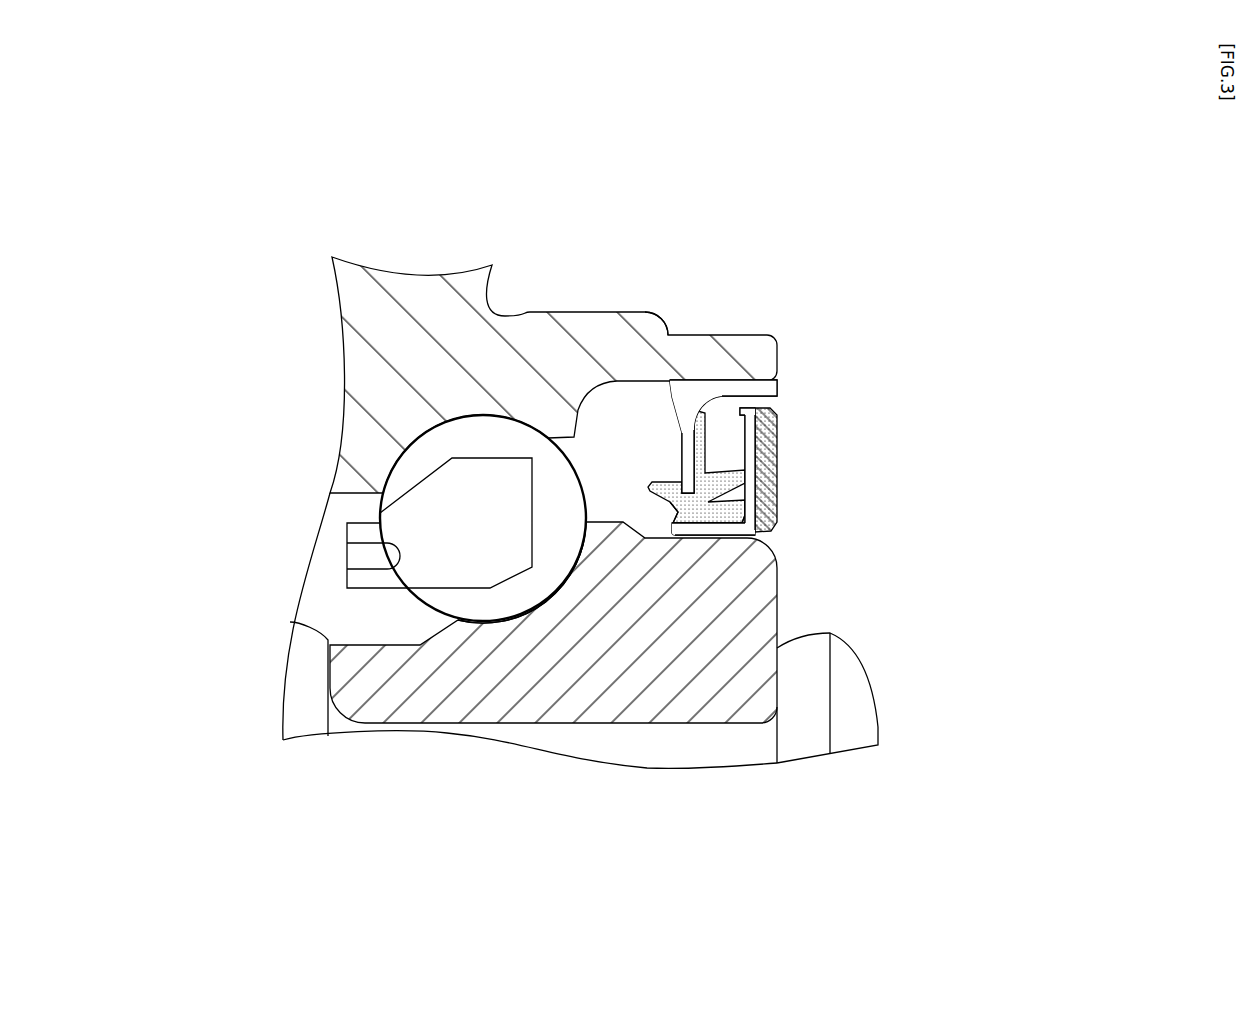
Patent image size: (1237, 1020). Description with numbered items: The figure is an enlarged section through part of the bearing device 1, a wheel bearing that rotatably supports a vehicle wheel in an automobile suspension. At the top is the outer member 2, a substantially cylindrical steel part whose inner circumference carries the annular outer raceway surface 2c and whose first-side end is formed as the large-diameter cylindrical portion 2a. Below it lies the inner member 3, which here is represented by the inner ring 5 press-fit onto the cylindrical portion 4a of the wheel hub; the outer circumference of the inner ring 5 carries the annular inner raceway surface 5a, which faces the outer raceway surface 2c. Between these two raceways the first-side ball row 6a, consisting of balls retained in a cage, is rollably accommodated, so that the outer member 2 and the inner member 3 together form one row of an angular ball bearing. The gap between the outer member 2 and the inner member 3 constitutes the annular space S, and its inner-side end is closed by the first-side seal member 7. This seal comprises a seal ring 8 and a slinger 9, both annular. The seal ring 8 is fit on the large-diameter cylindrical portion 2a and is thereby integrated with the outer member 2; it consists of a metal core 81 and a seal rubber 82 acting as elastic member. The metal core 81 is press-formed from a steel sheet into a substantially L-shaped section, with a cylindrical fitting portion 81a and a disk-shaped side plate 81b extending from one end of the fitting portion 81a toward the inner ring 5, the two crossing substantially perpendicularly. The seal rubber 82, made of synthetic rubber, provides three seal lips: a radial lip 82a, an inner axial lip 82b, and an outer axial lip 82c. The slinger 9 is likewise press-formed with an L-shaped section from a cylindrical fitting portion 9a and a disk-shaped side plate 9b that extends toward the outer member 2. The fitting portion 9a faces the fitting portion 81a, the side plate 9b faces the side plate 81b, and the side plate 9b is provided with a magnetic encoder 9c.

The bearing device 1 is at (202, 175).
The outer member 2 is at (592, 232).
The large-diameter cylindrical portion 2a is at (668, 335).
The outer raceway surface 2c is at (519, 418).
The inner member 3 is at (894, 672).
The cylindrical portion 4a is at (692, 768).
The inner ring 5 is at (776, 597).
The inner raceway surface 5a is at (493, 607).
The first-side ball row 6a is at (397, 470).
The first-side seal member 7 is at (746, 461).
The seal ring 8 is at (708, 435).
The metal core 81 is at (671, 406).
The fitting portion 81a is at (757, 378).
The side plate 81b is at (679, 439).
The seal rubber 82 is at (650, 485).
The radial lip 82a is at (680, 518).
The inner axial lip 82b is at (777, 517).
The outer axial lip 82c is at (768, 473).
The slinger 9 is at (782, 490).
The fitting portion 9a is at (707, 539).
The side plate 9b is at (758, 445).
The magnetic encoder 9c is at (777, 410).
The annular space S is at (313, 580).